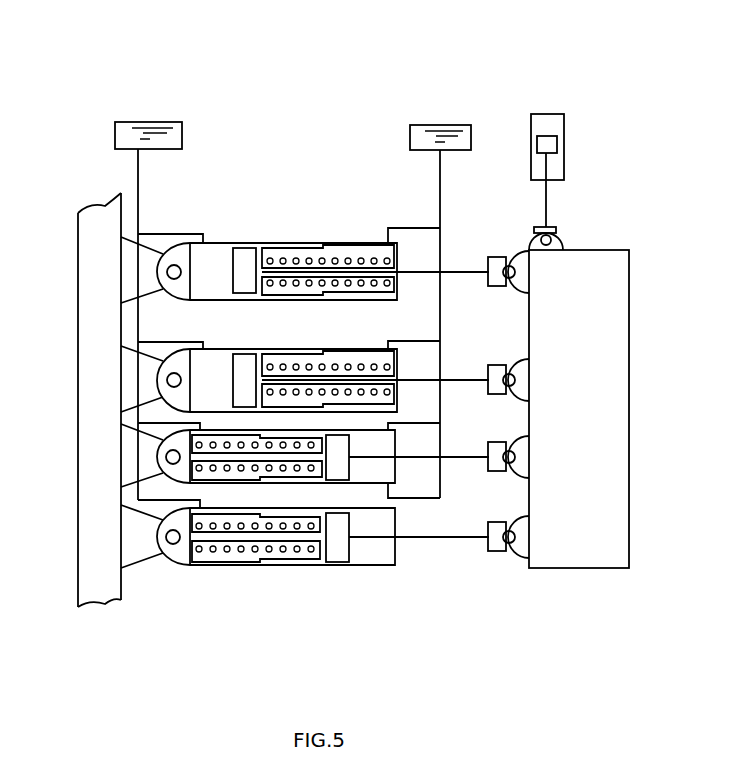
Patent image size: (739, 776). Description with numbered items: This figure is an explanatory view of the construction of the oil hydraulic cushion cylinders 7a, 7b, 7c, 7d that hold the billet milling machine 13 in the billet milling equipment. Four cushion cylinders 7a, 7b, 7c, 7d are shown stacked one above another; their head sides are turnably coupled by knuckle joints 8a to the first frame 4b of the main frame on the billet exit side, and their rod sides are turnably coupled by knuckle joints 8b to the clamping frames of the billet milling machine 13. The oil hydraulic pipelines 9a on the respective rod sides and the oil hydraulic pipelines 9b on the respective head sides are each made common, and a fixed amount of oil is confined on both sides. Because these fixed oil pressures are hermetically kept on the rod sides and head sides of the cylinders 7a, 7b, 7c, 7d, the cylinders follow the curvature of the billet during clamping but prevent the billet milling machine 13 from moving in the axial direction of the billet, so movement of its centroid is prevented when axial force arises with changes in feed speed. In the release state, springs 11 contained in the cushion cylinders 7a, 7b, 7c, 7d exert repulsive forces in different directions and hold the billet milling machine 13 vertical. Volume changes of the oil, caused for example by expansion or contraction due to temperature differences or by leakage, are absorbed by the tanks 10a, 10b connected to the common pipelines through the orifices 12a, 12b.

The first frame 4b is at (92, 555).
The oil hydraulic cushion cylinder 7a is at (306, 235).
The oil hydraulic cushion cylinder 7b is at (283, 344).
The oil hydraulic cushion cylinder 7c is at (296, 428).
The oil hydraulic cushion cylinder 7d is at (269, 574).
The knuckle joint 8a is at (172, 373).
The knuckle joint 8b is at (505, 374).
The oil hydraulic pipeline 9a is at (405, 227).
The oil hydraulic pipeline 9b is at (157, 234).
The tank 10a is at (418, 125).
The tank 10b is at (170, 122).
The spring 11 is at (343, 258).
The orifice 12a is at (435, 165).
The orifice 12b is at (133, 165).
The billet milling machine 13 is at (630, 293).